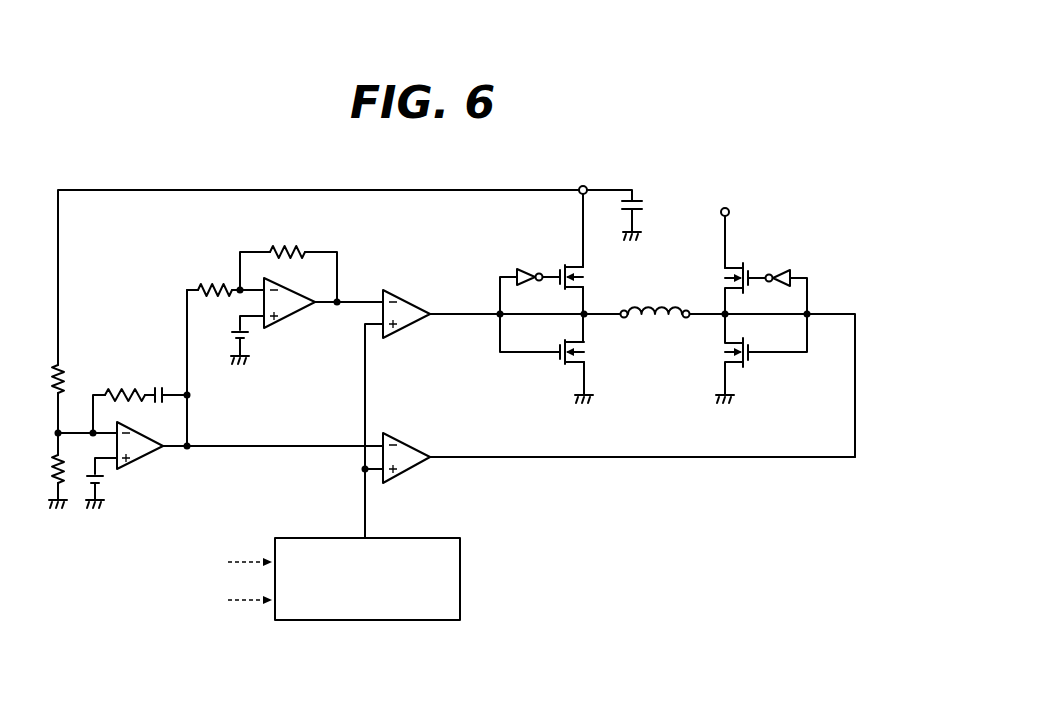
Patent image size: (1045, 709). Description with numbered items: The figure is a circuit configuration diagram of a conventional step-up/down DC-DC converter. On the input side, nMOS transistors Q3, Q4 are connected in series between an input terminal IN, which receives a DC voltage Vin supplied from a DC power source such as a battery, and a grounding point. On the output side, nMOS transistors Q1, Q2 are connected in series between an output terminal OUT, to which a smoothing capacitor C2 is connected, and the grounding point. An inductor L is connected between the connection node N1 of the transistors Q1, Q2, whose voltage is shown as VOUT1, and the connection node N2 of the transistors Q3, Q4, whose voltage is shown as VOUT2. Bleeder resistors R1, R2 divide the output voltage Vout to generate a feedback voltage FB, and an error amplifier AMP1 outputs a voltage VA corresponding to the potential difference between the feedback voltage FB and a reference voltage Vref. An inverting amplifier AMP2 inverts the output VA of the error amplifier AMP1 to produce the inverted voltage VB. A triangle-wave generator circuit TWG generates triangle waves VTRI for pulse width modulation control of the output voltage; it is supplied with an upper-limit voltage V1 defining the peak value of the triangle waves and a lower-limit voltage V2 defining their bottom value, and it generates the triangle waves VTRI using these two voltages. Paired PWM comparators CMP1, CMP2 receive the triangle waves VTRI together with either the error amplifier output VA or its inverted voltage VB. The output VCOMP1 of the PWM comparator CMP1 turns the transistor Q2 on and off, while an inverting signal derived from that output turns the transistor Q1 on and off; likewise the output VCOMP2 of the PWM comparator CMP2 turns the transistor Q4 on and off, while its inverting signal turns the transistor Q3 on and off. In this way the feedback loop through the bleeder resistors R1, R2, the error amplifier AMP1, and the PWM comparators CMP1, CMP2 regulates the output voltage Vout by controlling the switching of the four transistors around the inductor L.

The error amplifier AMP1 is at (164, 466).
The inverting amplifier AMP2 is at (212, 274).
The PWM comparator CMP1 is at (402, 298).
The PWM comparator CMP2 is at (403, 442).
The bleeder resistor R1 is at (41, 382).
The bleeder resistor R2 is at (41, 472).
The feedback voltage FB is at (57, 437).
The reference voltage Vref is at (123, 492).
The error amplifier output voltage VA is at (284, 440).
The inverted voltage VB is at (349, 292).
The PWM comparator output VCOMP1 is at (449, 337).
The PWM comparator output VCOMP2 is at (642, 450).
The triangle waves VTRI is at (332, 503).
The triangle-wave generator circuit TWG is at (460, 578).
The upper-limit voltage V1 is at (233, 562).
The lower-limit voltage V2 is at (233, 600).
The output voltage Vout is at (576, 177).
The output terminal OUT is at (577, 196).
The smoothing capacitor C2 is at (652, 218).
The nMOS transistor Q1 is at (570, 275).
The nMOS transistor Q2 is at (564, 371).
The connection node voltage VOUT1 is at (542, 319).
The connection node N1 is at (588, 320).
The inductor L is at (655, 300).
The connection node N2 is at (720, 320).
The DC voltage Vin is at (731, 199).
The input terminal IN is at (731, 217).
The nMOS transistor Q3 is at (739, 279).
The nMOS transistor Q4 is at (747, 370).
The connection node voltage VOUT2 is at (768, 319).